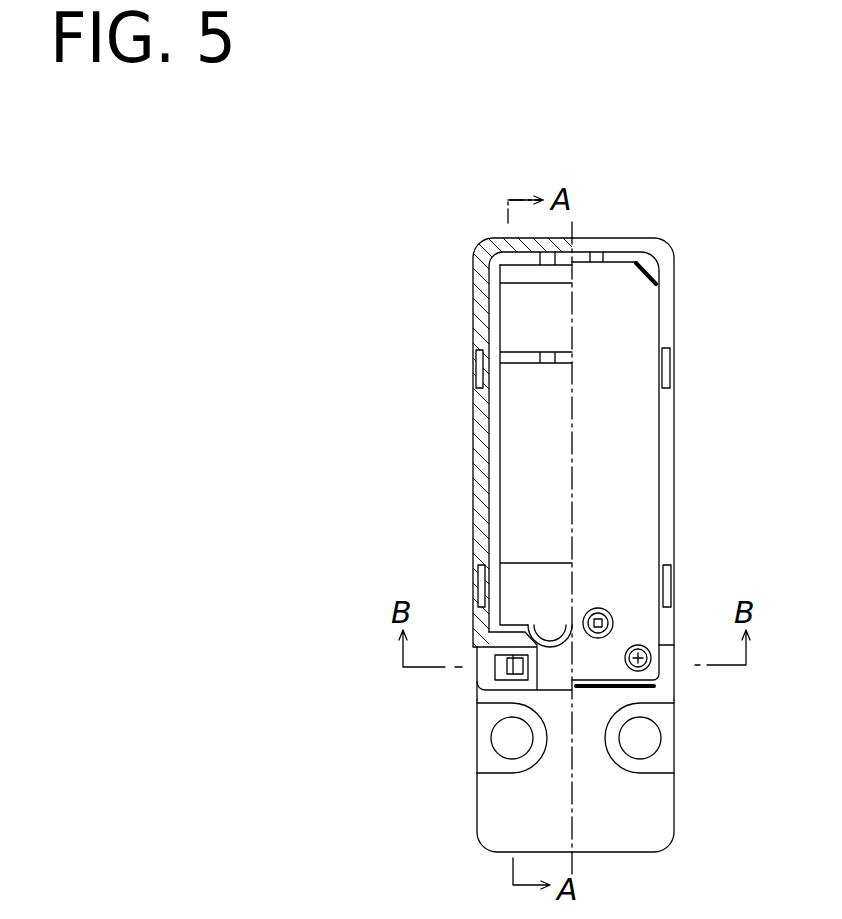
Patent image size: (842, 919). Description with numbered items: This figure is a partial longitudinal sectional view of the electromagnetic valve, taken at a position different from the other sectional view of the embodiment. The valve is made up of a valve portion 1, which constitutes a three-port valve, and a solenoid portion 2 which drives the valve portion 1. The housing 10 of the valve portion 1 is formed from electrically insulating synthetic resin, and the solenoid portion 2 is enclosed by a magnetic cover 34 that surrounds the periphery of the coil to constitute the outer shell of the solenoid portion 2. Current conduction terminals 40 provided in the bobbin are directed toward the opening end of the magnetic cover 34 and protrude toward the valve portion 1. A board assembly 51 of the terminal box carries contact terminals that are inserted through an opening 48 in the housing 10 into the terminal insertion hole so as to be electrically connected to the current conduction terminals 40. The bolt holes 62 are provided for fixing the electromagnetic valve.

The valve portion 1 is at (734, 700).
The solenoid portion 2 is at (740, 300).
The housing 10 is at (668, 818).
The magnetic cover 34 is at (641, 246).
The current conduction terminal 40 is at (505, 661).
The opening 48 is at (497, 676).
The board assembly 51 is at (675, 444).
The bolt hole 62 is at (509, 748).